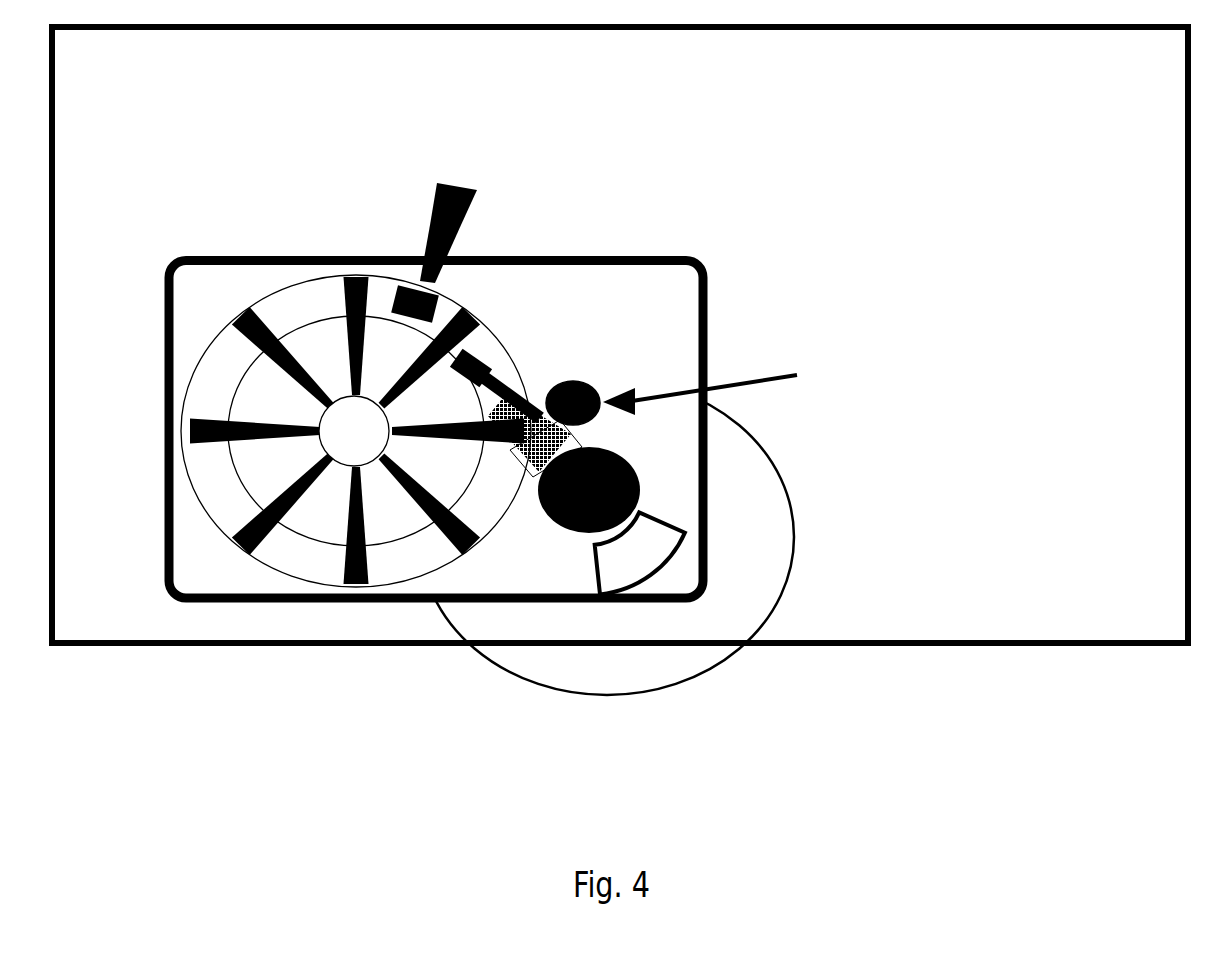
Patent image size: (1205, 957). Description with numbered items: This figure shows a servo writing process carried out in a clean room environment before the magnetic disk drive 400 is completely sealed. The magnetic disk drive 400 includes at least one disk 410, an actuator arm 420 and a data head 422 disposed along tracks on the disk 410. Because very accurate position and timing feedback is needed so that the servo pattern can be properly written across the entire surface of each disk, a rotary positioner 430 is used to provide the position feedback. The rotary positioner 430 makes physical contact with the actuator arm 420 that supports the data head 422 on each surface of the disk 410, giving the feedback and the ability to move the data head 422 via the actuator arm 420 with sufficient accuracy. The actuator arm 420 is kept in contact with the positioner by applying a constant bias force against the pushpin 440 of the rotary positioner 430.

The magnetic disk drive 400 is at (238, 130).
The disk 410 is at (287, 307).
The actuator arm 420 is at (541, 437).
The data head 422 is at (468, 372).
The rotary positioner 430 is at (729, 537).
The pushpin 440 is at (749, 385).